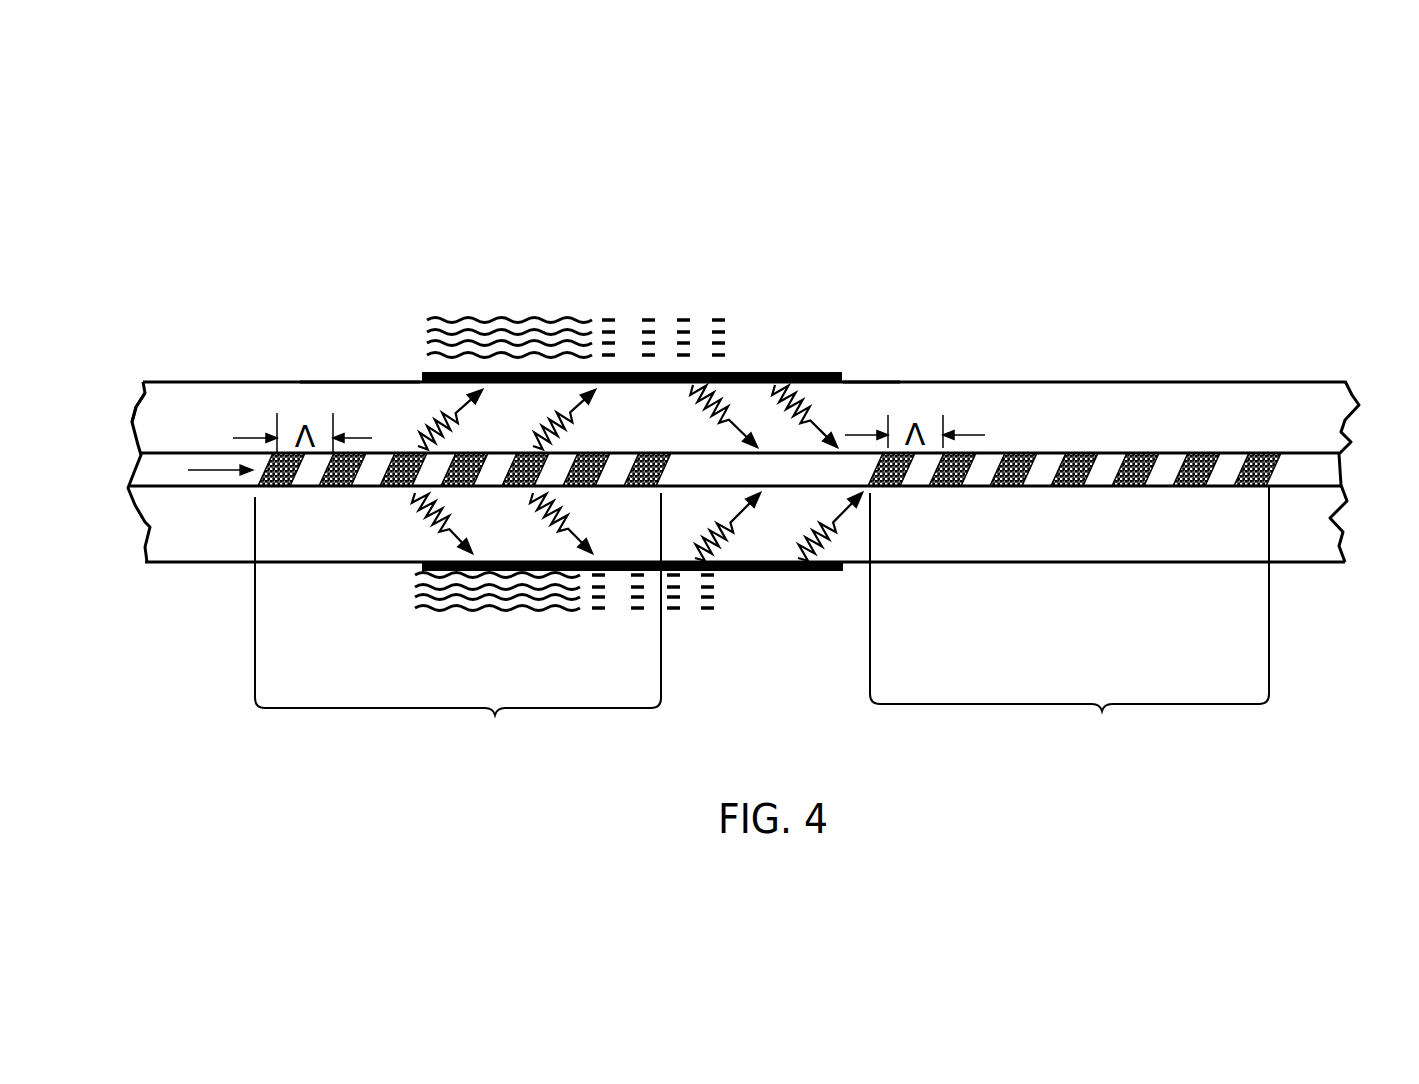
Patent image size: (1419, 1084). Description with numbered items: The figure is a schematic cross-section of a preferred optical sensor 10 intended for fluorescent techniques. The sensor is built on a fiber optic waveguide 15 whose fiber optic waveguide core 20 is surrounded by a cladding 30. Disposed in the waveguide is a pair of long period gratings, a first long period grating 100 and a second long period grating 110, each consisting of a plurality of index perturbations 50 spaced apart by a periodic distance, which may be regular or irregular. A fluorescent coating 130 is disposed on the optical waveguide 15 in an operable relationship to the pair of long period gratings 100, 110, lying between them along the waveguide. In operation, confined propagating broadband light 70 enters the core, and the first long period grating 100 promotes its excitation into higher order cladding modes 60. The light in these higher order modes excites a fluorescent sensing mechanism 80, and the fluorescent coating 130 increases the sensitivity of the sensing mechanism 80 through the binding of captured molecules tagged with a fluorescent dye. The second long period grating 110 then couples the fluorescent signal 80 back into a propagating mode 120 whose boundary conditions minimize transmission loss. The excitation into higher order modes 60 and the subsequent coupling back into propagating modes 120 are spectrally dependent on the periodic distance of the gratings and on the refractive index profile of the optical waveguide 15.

The optical sensor 10 is at (743, 530).
The fiber optic waveguide 15 is at (109, 391).
The fiber optic waveguide core 20 is at (723, 535).
The cladding 30 is at (593, 355).
The index perturbations 50 is at (829, 365).
The higher order cladding modes 60 is at (451, 465).
The confined propagating broadband light 70 is at (200, 467).
The fluorescent sensing mechanism 80 is at (570, 471).
The first long period grating 100 is at (458, 624).
The second long period grating 110 is at (1069, 619).
The propagating mode 120 is at (776, 481).
The fluorescent coating 130 is at (685, 487).